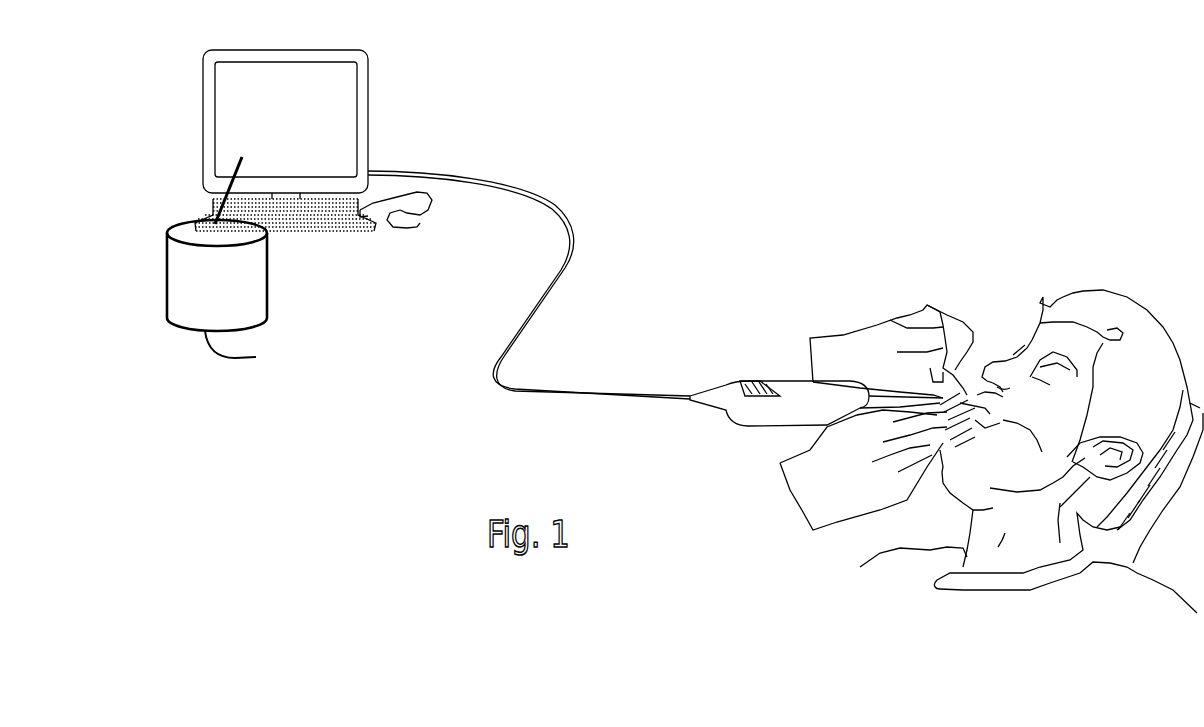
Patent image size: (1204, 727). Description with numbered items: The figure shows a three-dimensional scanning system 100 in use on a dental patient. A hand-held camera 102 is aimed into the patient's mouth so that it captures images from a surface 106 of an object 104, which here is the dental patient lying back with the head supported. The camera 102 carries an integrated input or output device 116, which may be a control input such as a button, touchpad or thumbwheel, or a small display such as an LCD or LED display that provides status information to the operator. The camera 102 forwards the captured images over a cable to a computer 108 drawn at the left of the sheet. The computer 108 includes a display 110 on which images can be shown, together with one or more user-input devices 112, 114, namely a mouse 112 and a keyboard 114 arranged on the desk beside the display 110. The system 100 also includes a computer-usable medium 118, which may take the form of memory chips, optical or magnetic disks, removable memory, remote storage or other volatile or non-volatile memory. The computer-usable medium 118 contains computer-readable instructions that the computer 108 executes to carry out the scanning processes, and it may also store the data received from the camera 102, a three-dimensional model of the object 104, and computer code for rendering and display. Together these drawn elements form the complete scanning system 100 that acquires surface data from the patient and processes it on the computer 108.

The three-dimensional scanning system 100 is at (828, 163).
The camera 102 is at (877, 417).
The object 104 is at (1028, 331).
The surface 106 is at (1016, 434).
The computer 108 is at (203, 142).
The display 110 is at (320, 50).
The mouse 112 is at (420, 223).
The keyboard 114 is at (204, 217).
The integrated input or output device 116 is at (752, 378).
The computer-usable medium 118 is at (256, 353).